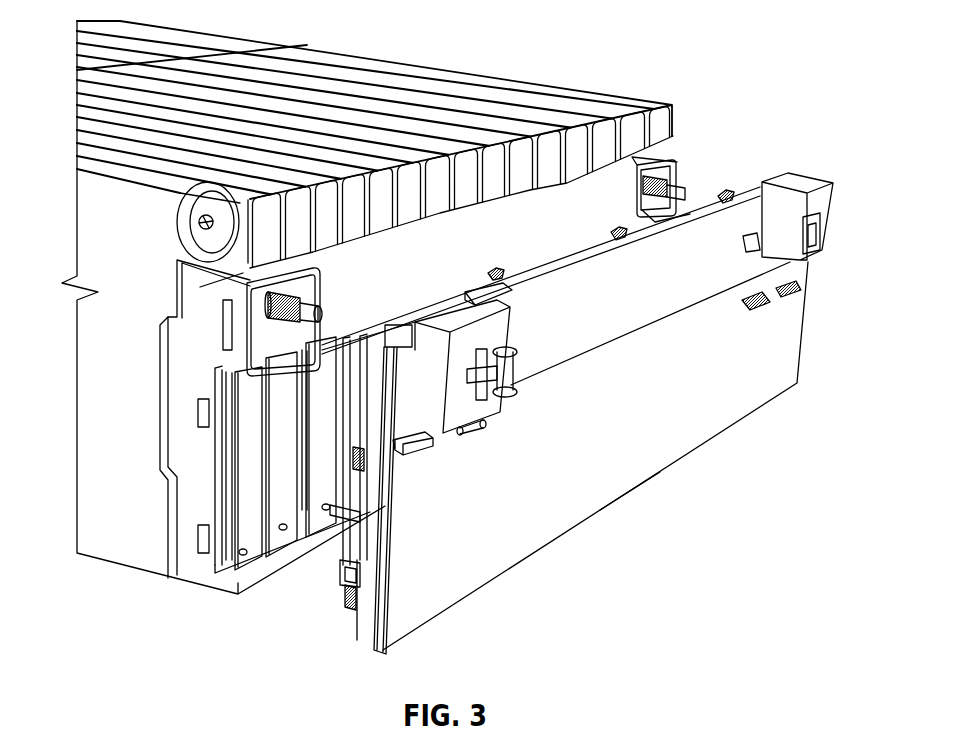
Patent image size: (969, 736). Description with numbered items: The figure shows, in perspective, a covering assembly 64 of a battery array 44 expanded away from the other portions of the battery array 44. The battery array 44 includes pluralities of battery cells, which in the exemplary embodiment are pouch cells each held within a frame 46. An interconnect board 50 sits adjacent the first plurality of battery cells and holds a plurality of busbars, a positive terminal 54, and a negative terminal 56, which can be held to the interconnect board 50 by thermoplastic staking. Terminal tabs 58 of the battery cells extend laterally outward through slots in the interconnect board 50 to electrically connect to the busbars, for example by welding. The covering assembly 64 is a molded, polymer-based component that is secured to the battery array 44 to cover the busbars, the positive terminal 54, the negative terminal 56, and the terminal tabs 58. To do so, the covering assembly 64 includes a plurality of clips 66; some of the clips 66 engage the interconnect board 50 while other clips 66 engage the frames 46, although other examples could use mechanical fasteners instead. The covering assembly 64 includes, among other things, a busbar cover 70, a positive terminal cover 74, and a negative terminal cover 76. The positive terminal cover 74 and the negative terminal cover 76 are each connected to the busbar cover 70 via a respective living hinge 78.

The battery array 44 is at (735, 40).
The frame 46 is at (460, 123).
The interconnect board 50 is at (203, 482).
The positive terminal 54 is at (288, 290).
The negative terminal 56 is at (678, 172).
The terminal tabs 58 is at (393, 456).
The covering assembly 64 is at (758, 380).
The clips 66 is at (495, 278).
The busbar cover 70 is at (623, 467).
The positive terminal cover 74 is at (512, 365).
The negative terminal cover 76 is at (815, 203).
The living hinge 78 is at (757, 252).